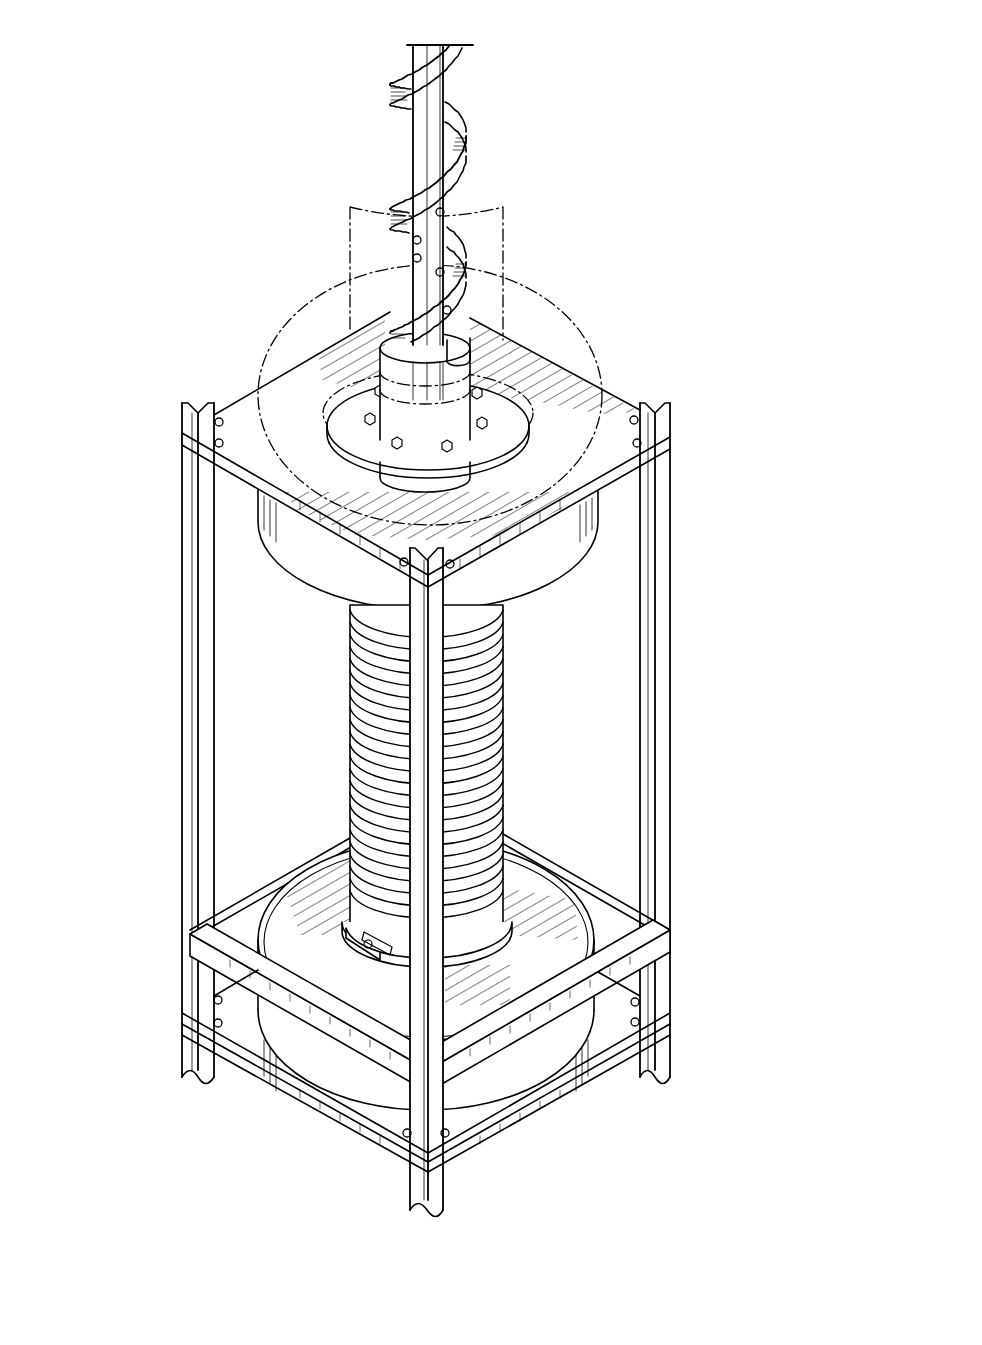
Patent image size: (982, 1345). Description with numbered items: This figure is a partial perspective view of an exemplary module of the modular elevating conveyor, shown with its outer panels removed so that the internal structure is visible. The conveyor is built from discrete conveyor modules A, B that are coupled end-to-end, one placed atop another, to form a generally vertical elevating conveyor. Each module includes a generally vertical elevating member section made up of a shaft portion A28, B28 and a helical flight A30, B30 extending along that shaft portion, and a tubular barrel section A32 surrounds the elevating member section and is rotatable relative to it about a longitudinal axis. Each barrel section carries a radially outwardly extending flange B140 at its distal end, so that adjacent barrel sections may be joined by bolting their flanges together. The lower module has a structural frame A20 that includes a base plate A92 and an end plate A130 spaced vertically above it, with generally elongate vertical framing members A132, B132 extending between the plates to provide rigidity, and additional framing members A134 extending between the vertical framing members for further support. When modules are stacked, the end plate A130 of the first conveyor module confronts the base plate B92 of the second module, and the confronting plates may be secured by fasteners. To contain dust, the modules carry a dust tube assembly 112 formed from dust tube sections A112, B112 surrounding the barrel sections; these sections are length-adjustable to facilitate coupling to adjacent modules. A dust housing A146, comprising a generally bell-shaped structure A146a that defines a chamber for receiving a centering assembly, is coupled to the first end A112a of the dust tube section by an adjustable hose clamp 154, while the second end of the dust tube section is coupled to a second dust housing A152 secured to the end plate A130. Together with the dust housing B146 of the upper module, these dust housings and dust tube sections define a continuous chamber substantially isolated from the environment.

The conveyor module A is at (81, 396).
The conveyor module B is at (80, 2).
The shaft portion B28 is at (485, 195).
The helical flight B30 is at (478, 194).
The shaft portion A28 is at (447, 323).
The helical flight A30 is at (460, 262).
The dust tube section B112 is at (350, 215).
The flange B140 is at (375, 395).
The dust housing B146 is at (593, 370).
The vertical framing member B132 is at (670, 418).
The base plate B92 is at (236, 445).
The end plate A130 is at (429, 449).
The tubular barrel section A32 is at (462, 470).
The second dust housing A152 is at (567, 557).
The dust tube assembly 112 is at (485, 765).
The dust tube section A112 is at (488, 688).
The first end A112a is at (493, 903).
The vertical framing member A132 is at (473, 743).
The structural frame A20 is at (421, 659).
The additional framing member A134 is at (268, 888).
The dust housing A146 is at (340, 975).
The bell-shaped structure A146a is at (273, 1032).
The adjustable hose clamp 154 is at (645, 963).
The base plate A92 is at (607, 1037).